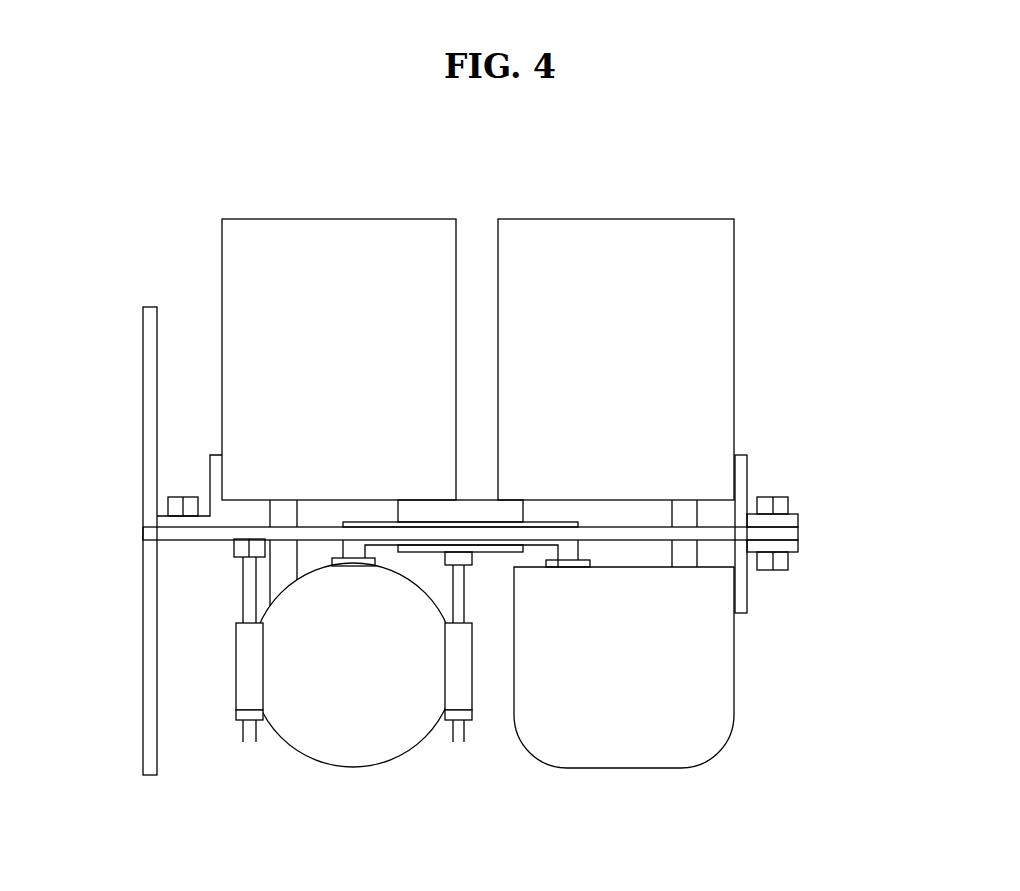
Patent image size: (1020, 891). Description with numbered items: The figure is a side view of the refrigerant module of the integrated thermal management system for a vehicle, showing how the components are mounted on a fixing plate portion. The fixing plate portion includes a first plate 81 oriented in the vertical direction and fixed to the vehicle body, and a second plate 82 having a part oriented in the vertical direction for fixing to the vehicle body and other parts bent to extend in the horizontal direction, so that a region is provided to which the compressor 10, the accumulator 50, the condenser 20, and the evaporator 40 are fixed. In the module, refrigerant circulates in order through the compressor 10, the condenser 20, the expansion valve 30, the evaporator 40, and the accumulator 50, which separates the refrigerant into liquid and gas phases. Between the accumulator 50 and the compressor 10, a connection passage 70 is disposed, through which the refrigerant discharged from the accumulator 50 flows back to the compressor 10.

The compressor 10 is at (320, 750).
The condenser 20 is at (339, 227).
The expansion valve 30 is at (480, 510).
The evaporator 40 is at (655, 227).
The accumulator 50 is at (661, 757).
The connection passage 70 is at (570, 550).
The first plate 81 is at (147, 409).
The second plate 82 is at (792, 534).